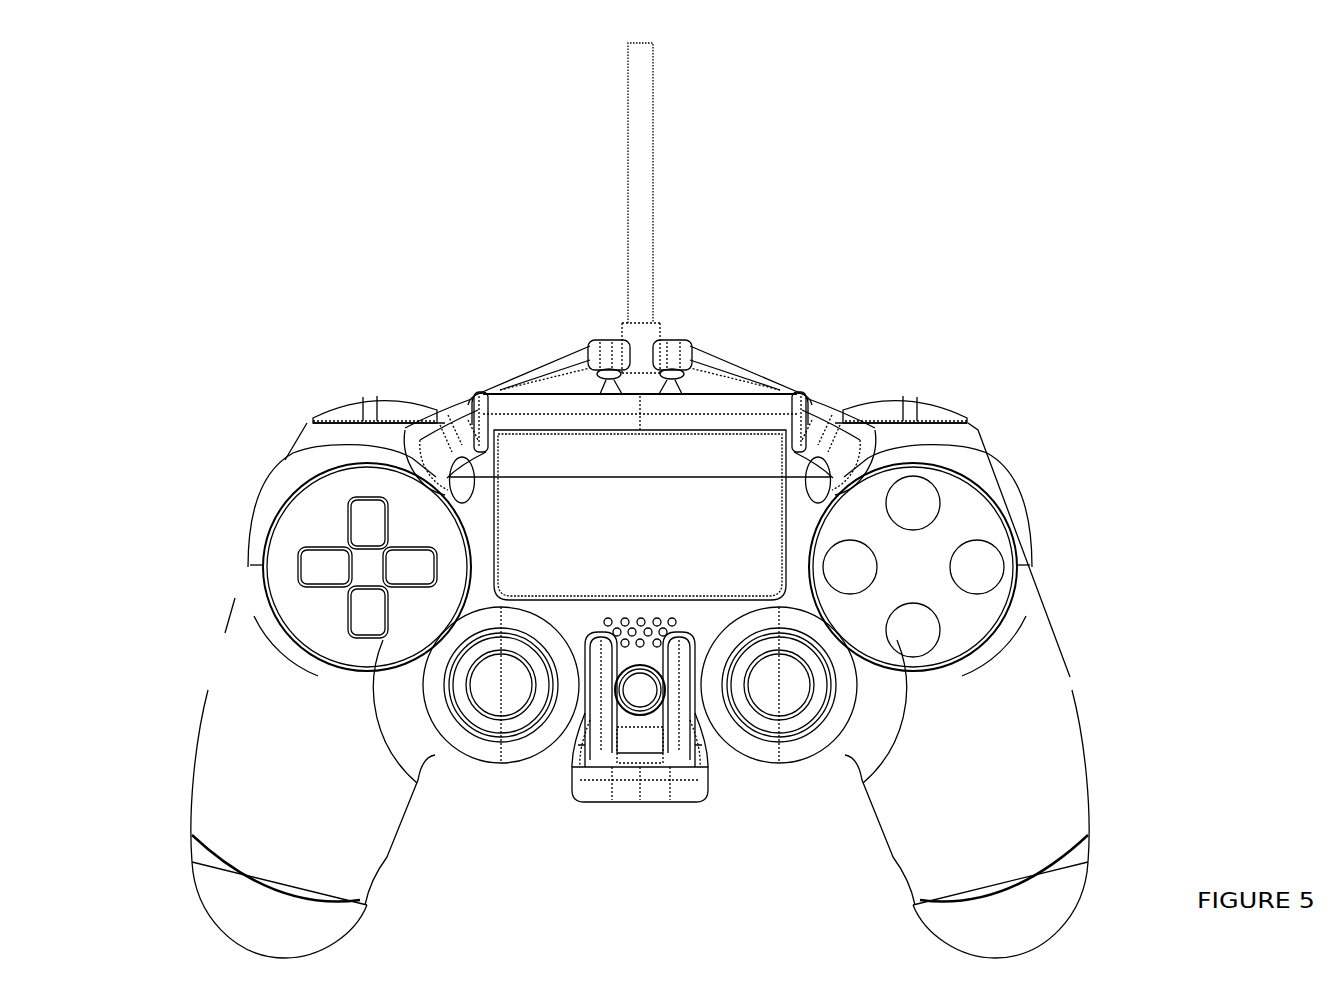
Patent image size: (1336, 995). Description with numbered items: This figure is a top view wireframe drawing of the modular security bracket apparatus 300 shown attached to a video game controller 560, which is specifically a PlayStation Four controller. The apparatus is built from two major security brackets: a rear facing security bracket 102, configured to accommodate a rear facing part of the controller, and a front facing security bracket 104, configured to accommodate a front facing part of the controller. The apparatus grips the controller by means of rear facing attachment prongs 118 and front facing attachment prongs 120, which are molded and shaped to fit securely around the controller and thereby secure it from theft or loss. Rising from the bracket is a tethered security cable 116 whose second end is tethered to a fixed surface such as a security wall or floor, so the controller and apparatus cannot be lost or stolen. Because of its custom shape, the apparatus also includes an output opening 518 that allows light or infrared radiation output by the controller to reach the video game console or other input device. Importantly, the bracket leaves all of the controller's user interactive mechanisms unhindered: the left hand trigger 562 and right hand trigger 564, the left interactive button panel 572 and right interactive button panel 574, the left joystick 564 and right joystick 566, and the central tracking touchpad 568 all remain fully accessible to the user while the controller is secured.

The rear facing security bracket 102 is at (600, 520).
The tethered security cable 116 is at (650, 193).
The tracking touchpad 568 is at (575, 385).
The output opening 518 is at (708, 377).
The rear facing attachment prongs 118 is at (447, 428).
The video game controller 560 is at (313, 443).
The left interactive button panel 572 is at (305, 525).
The right interactive button panel 574 is at (977, 512).
The left hand trigger 562 is at (245, 756).
The right hand trigger 564 is at (490, 678).
The right joystick 566 is at (790, 692).
The front facing attachment prongs 120 is at (603, 655).
The modular security bracket apparatus 300 is at (642, 792).
The front facing security bracket 104 is at (678, 770).